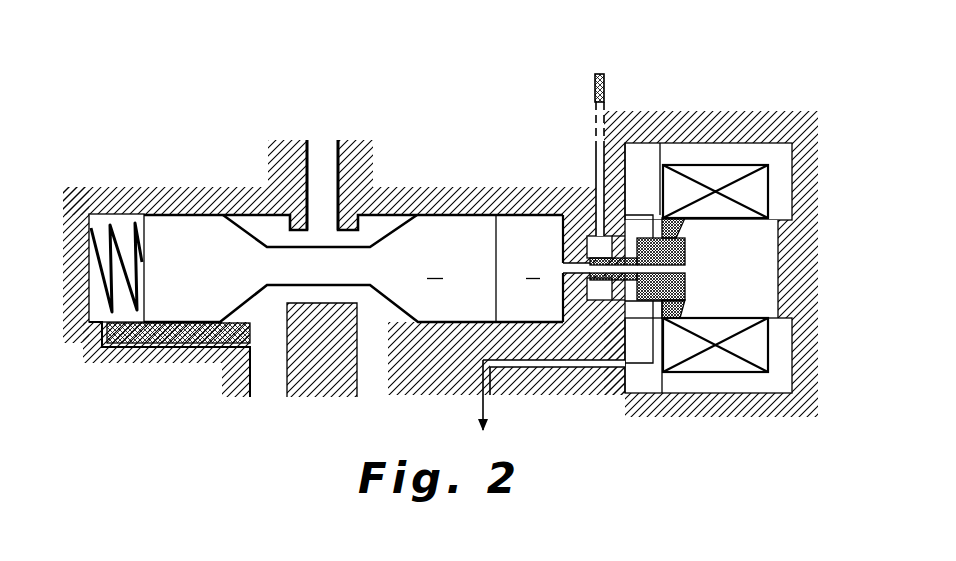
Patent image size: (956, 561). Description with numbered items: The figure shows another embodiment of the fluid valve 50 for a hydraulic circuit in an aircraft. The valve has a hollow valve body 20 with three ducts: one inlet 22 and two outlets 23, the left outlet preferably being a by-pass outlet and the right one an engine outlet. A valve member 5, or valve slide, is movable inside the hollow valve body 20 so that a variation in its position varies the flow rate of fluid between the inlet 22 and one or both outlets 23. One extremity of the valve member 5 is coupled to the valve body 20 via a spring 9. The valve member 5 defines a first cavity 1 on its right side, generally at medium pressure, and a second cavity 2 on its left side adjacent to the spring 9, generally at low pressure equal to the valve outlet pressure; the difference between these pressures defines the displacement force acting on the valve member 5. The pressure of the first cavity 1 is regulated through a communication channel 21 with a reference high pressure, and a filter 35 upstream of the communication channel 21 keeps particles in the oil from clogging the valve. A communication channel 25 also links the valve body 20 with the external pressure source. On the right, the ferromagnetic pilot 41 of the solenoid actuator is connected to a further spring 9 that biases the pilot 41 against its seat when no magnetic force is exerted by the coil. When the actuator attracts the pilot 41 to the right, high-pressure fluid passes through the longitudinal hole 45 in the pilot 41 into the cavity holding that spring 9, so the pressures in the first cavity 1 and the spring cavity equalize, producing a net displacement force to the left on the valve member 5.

The fluid valve 50 is at (129, 122).
The spring 9 is at (118, 242).
The second cavity 2 is at (98, 305).
The inlet 22 is at (323, 163).
The valve member 5 is at (320, 268).
The first cavity 1 is at (529, 268).
The outlets 23 is at (269, 362).
The communication channel 21 is at (600, 60).
The filter 35 is at (605, 85).
The pilot 41 is at (643, 238).
The longitudinal hole 45 is at (628, 270).
The communication channel 25 is at (565, 360).
The valve body 20 is at (752, 412).